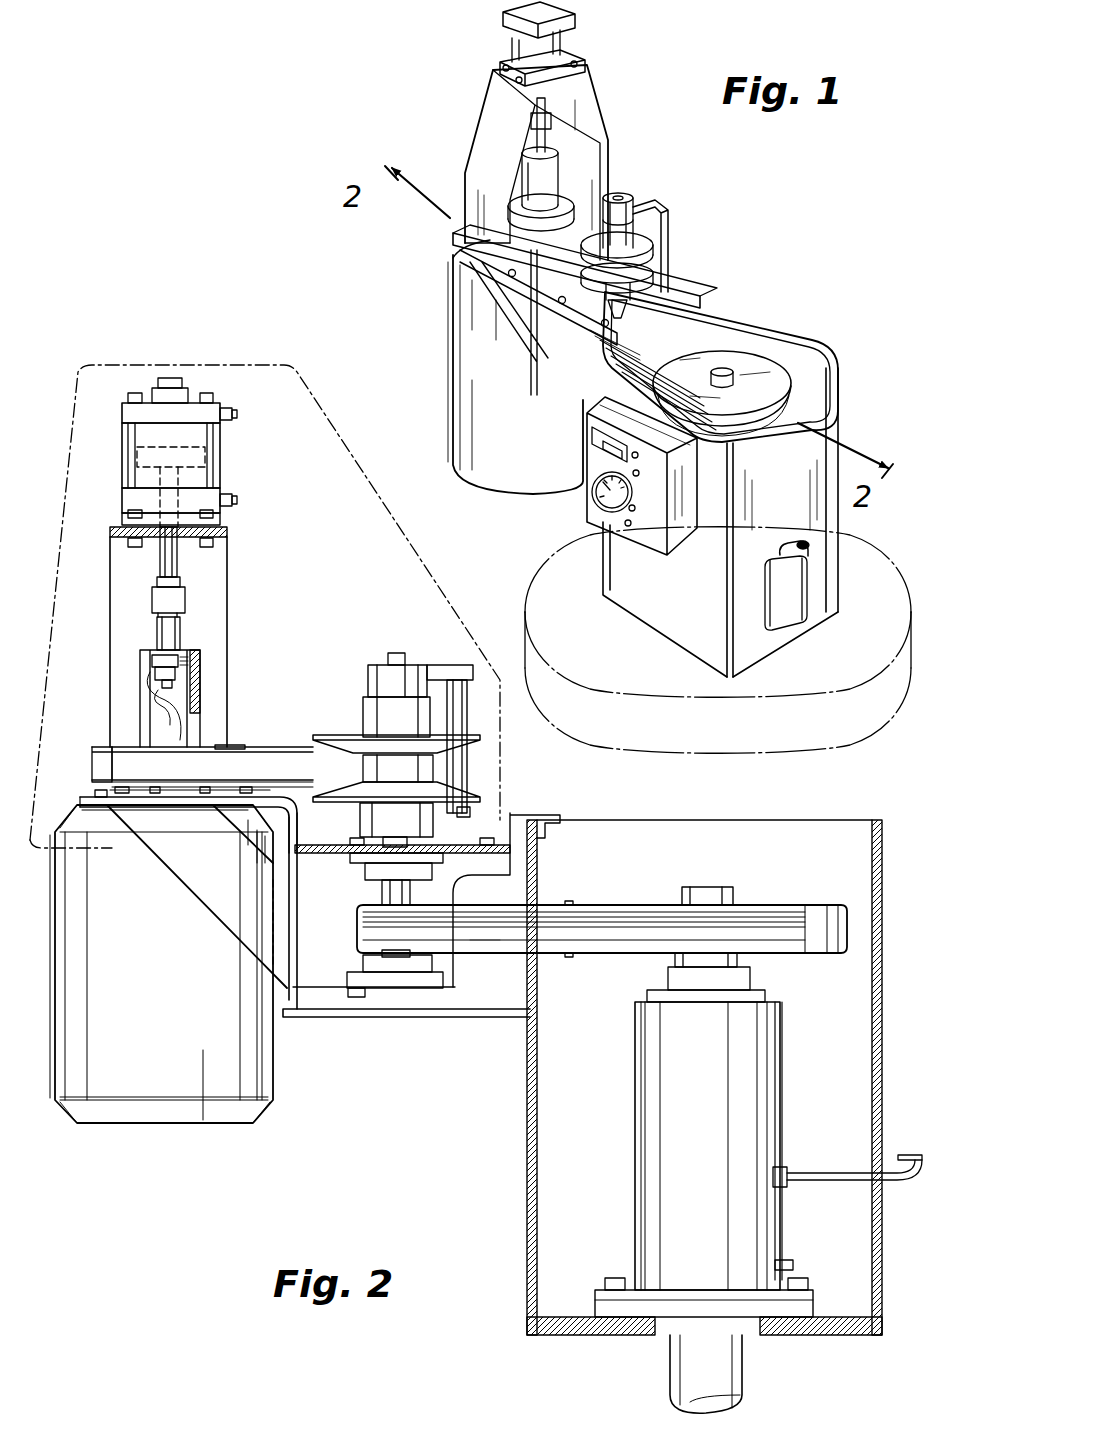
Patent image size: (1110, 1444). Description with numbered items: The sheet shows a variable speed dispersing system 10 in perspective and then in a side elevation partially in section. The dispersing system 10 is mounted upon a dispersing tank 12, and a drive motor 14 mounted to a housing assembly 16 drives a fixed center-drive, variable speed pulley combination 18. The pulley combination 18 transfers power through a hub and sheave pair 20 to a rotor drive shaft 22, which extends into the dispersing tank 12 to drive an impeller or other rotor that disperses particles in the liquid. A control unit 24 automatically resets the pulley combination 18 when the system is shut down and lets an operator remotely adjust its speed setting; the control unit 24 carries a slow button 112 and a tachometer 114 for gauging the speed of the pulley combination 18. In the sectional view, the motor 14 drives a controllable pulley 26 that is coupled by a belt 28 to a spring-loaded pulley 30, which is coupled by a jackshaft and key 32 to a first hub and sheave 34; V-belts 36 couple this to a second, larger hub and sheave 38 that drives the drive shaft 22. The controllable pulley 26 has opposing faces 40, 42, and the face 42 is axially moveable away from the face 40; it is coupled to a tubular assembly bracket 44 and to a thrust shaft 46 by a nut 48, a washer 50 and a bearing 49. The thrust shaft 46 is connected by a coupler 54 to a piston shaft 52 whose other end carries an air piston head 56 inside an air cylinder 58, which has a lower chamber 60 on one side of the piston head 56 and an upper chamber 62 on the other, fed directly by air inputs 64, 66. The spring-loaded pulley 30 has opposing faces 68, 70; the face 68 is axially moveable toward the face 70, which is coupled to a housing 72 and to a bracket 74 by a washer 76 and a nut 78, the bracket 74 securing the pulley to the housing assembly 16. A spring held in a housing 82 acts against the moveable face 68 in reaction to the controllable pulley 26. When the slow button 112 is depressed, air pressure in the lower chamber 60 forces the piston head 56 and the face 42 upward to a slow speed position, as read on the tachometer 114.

In FIG. 1, the dispersing system 10 is at (752, 263).
In FIG. 1, the dispersing tank 12 is at (872, 572).
In FIG. 1, the drive motor 14 is at (470, 390).
In FIG. 2, the drive motor 14 is at (255, 1078).
In FIG. 1, the housing assembly 16 is at (487, 272).
In FIG. 2, the housing assembly 16 is at (222, 915).
In FIG. 1, the fixed center-drive, variable speed pulley combination 18 is at (620, 191).
In FIG. 2, the fixed center-drive, variable speed pulley combination 18 is at (272, 615).
In FIG. 1, the hub and sheave pair 20 is at (725, 322).
In FIG. 2, the hub and sheave pair 20 is at (597, 960).
In FIG. 1, the rotor drive shaft 22 is at (728, 388).
In FIG. 2, the rotor drive shaft 22 is at (735, 898).
In FIG. 1, the control unit 24 is at (590, 506).
In FIG. 1, the controllable pulley 26 is at (556, 200).
In FIG. 2, the controllable pulley 26 is at (95, 738).
In FIG. 1, the belt 28 is at (528, 238).
In FIG. 2, the belt 28 is at (280, 750).
In FIG. 1, the spring-loaded pulley 30 is at (648, 246).
In FIG. 2, the spring-loaded pulley 30 is at (358, 735).
In FIG. 2, the jackshaft and key 32 is at (385, 895).
In FIG. 2, the first hub and sheave 34 is at (364, 960).
In FIG. 1, the V-belts 36 is at (620, 385).
In FIG. 2, the V-belts 36 is at (487, 932).
In FIG. 1, the second hub and sheave 38 is at (775, 368).
In FIG. 2, the second hub and sheave 38 is at (622, 905).
In FIG. 2, the face 40 is at (92, 795).
In FIG. 2, the face 42 is at (225, 750).
In FIG. 1, the tubular assembly bracket 44 is at (528, 182).
In FIG. 2, the tubular assembly bracket 44 is at (148, 712).
In FIG. 2, the thrust shaft 46 is at (158, 632).
In FIG. 2, the nut 48 is at (176, 690).
In FIG. 2, the bearing 49 is at (196, 658).
In FIG. 2, the washer 50 is at (182, 680).
In FIG. 2, the piston shaft 52 is at (162, 562).
In FIG. 1, the coupler 54 is at (551, 124).
In FIG. 2, the coupler 54 is at (160, 600).
In FIG. 2, the air piston head 56 is at (215, 448).
In FIG. 1, the air cylinder 58 is at (556, 35).
In FIG. 2, the air cylinder 58 is at (222, 478).
In FIG. 2, the lower chamber 60 is at (142, 477).
In FIG. 2, the upper chamber 62 is at (136, 433).
In FIG. 2, the air input 64 is at (237, 503).
In FIG. 2, the air input 66 is at (237, 414).
In FIG. 2, the face 68 is at (478, 793).
In FIG. 2, the face 70 is at (478, 742).
In FIG. 2, the housing 72 is at (375, 665).
In FIG. 1, the bracket 74 is at (657, 206).
In FIG. 2, the bracket 74 is at (450, 665).
In FIG. 2, the washer 76 is at (410, 665).
In FIG. 2, the nut 78 is at (397, 653).
In FIG. 2, the housing 82 is at (428, 828).
In FIG. 1, the slow button 112 is at (656, 470).
In FIG. 1, the tachometer 114 is at (593, 438).